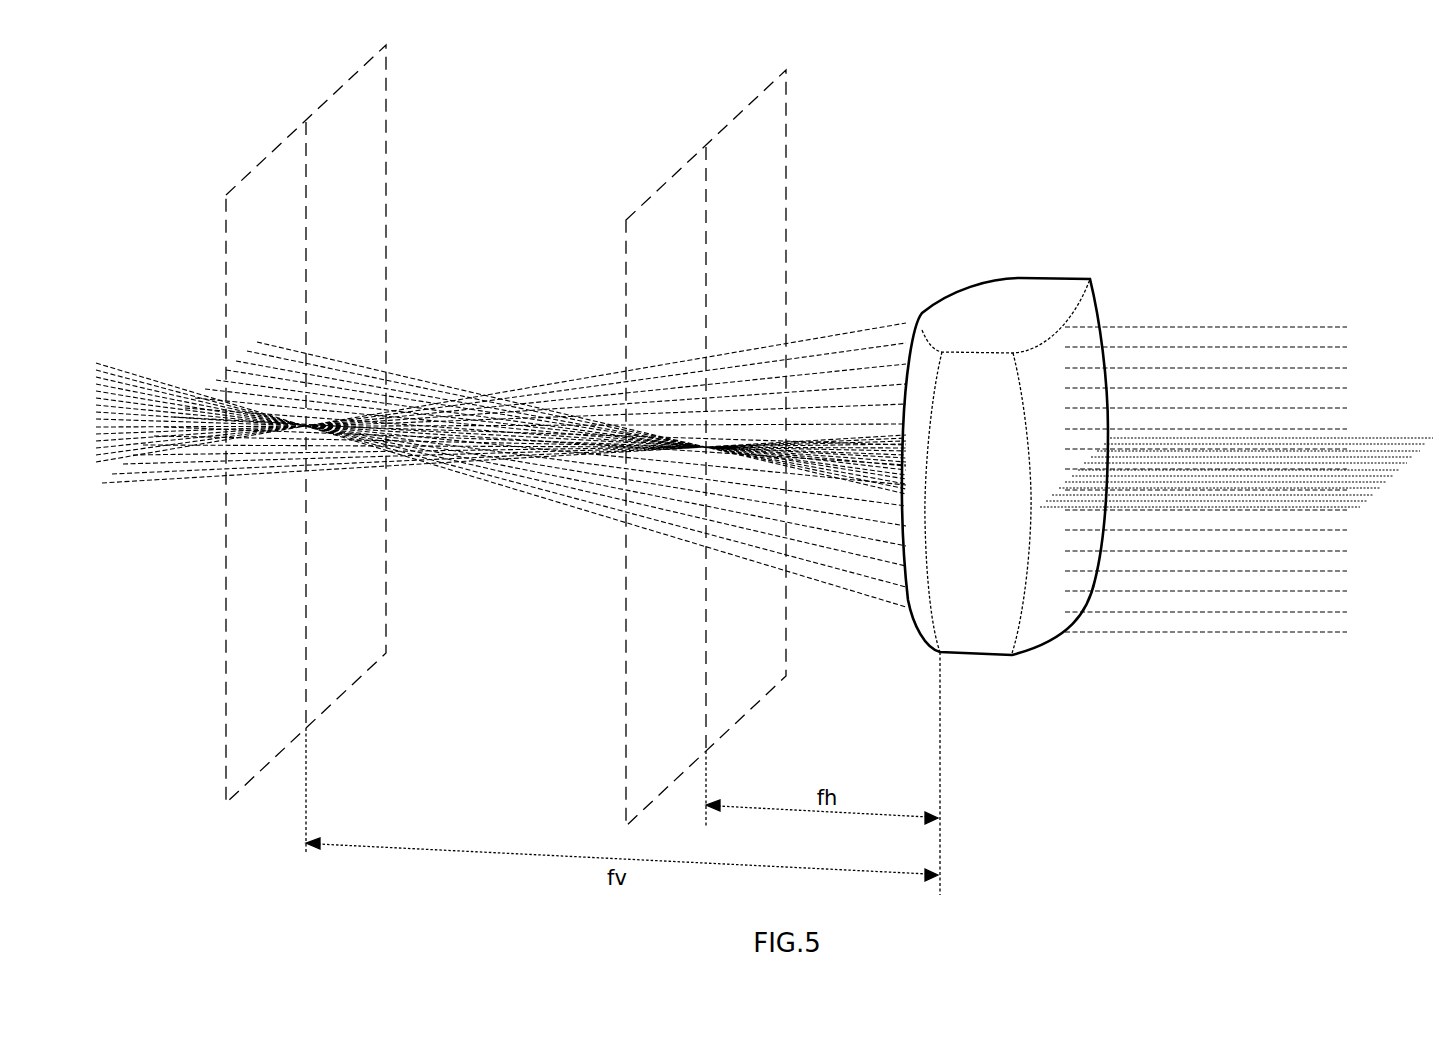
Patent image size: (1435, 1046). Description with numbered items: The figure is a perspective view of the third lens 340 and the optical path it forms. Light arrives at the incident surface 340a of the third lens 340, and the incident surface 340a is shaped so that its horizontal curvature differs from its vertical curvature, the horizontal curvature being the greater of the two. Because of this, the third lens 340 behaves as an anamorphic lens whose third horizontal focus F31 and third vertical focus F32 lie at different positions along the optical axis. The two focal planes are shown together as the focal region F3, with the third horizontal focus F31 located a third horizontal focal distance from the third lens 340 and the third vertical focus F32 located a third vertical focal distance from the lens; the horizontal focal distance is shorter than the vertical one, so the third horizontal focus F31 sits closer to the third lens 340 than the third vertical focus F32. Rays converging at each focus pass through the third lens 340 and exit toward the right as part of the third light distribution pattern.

The third lens 340 is at (1005, 305).
The incident surface 340a is at (920, 362).
The focal planes F3 is at (658, 154).
The third horizontal focus F31 is at (707, 447).
The third vertical focus F32 is at (305, 427).